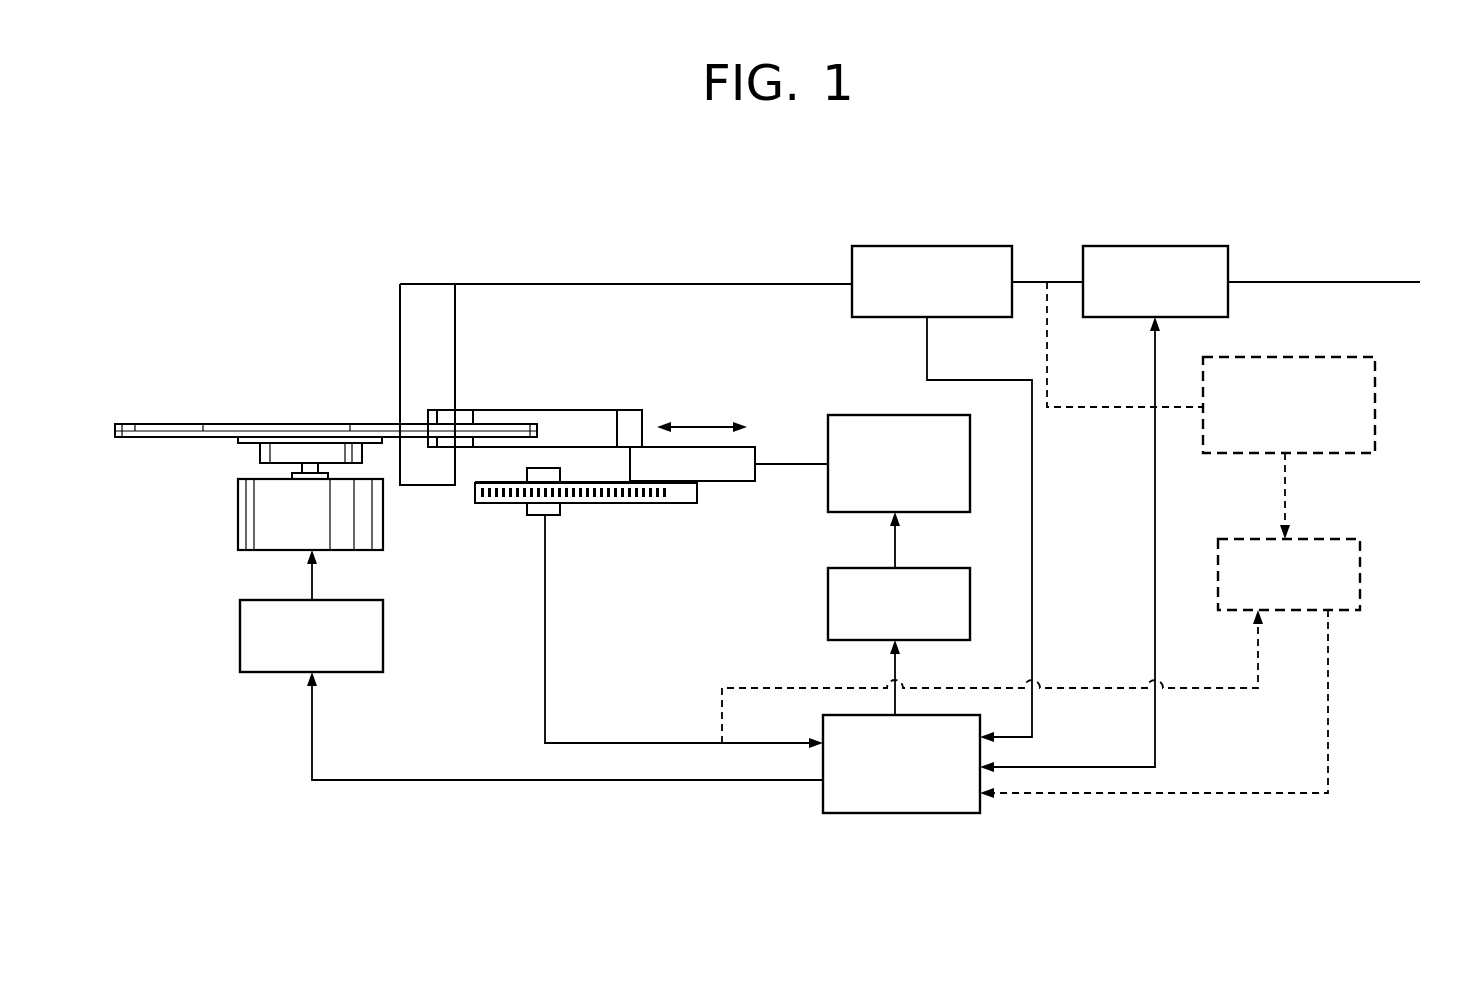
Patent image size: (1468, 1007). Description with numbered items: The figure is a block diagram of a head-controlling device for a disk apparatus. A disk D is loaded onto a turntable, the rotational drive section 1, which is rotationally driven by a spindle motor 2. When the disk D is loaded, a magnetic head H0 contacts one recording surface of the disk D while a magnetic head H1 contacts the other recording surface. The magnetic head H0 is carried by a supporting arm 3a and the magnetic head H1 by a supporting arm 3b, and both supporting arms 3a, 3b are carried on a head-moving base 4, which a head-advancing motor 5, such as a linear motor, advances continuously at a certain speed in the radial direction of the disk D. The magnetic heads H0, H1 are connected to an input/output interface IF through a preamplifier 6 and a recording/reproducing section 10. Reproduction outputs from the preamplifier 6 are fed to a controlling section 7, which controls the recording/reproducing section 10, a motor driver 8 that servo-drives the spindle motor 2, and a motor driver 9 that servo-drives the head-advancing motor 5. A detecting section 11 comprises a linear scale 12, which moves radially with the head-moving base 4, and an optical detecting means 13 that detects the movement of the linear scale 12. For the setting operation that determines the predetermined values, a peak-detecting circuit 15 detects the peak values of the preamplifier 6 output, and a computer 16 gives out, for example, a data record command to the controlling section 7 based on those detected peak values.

The disk D is at (162, 422).
The rotational drive section 1 is at (258, 451).
The spindle motor 2 is at (238, 522).
The supporting arm 3a is at (590, 445).
The supporting arm 3b is at (543, 408).
The magnetic head H0 is at (450, 443).
The magnetic head H1 is at (462, 415).
The head-moving base 4 is at (735, 483).
The head-advancing motor 5 is at (862, 413).
The preamplifier 6 is at (965, 244).
The controlling section 7 is at (932, 815).
The motor driver 8 is at (240, 636).
The motor driver 9 is at (828, 618).
The recording/reproducing (R/W) section 10 is at (1182, 244).
The detecting section 11 is at (512, 540).
The linear scale 12 is at (670, 503).
The optical detecting means 13 is at (548, 518).
The peak-detecting circuit 15 is at (1375, 415).
The computer 16 is at (1360, 578).
The input/output interface IF is at (1340, 283).